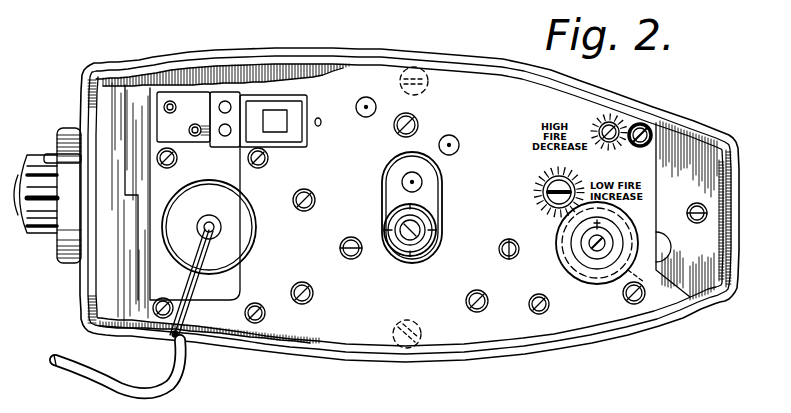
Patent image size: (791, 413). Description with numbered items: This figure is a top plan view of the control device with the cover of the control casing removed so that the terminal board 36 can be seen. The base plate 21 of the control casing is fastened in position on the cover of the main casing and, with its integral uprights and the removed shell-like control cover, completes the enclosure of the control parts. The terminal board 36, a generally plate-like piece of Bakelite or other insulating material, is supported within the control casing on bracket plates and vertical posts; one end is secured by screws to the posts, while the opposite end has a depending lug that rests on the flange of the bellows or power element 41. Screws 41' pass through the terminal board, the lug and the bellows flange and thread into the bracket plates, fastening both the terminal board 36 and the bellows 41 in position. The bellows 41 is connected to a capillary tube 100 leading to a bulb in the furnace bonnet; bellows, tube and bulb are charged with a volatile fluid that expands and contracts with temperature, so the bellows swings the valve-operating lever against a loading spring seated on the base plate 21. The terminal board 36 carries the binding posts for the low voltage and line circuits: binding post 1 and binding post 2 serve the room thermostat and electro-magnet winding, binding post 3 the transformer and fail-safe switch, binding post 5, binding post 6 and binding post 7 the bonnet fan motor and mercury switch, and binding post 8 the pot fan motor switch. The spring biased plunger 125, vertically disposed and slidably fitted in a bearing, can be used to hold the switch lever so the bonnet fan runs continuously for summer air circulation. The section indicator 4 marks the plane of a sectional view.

The binding post 1 is at (517, 243).
The binding post 2 is at (548, 314).
The binding post 3 is at (482, 314).
The section line 4 is at (143, 152).
The binding post 5 is at (355, 260).
The binding post 6 is at (308, 305).
The binding post 7 is at (310, 196).
The binding post 8 is at (280, 121).
The base plate 21 is at (688, 152).
The terminal board 36 is at (452, 119).
The bellows or power element 41 is at (209, 227).
The screws 41' is at (161, 366).
The capillary tube 100 is at (193, 288).
The spring biased plunger 125 is at (398, 258).